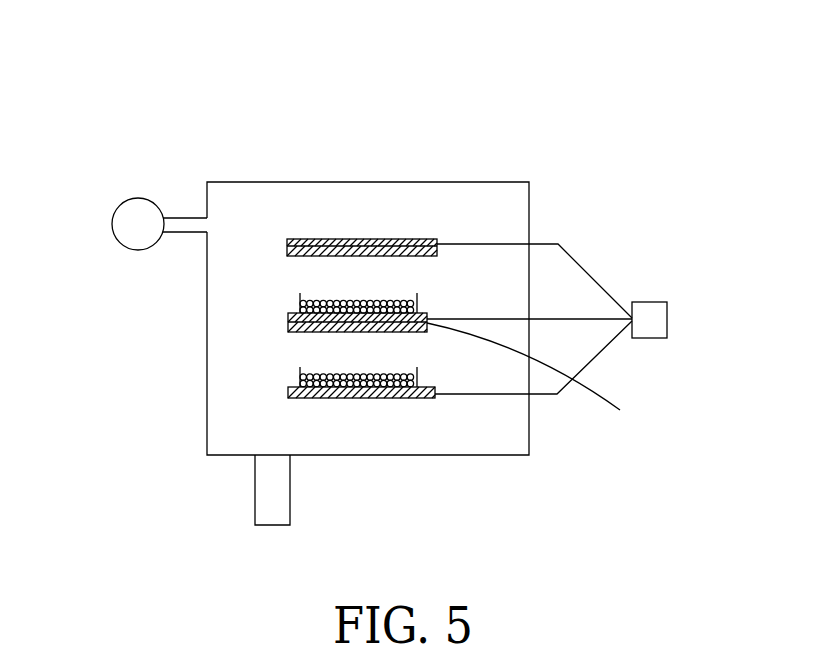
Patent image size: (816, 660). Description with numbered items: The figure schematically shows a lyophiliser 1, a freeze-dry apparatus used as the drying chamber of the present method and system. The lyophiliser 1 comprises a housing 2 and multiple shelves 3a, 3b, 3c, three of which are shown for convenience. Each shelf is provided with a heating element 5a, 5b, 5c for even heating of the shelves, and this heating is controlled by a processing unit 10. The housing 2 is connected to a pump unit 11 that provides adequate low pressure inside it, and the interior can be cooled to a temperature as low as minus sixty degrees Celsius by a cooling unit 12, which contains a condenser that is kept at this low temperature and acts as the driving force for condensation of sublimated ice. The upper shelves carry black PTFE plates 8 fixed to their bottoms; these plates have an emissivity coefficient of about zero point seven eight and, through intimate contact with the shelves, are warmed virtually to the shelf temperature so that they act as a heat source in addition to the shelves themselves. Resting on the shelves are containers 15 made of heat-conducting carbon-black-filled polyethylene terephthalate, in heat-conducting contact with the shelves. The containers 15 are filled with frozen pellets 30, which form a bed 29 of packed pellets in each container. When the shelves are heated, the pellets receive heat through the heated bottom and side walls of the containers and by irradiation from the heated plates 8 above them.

The lyophiliser 1 is at (552, 151).
The housing 2 is at (490, 455).
The shelf 3a is at (300, 239).
The shelf 3b is at (292, 327).
The shelf 3c is at (292, 396).
The heating element 5a is at (425, 241).
The heating element 5b is at (425, 321).
The heating element 5c is at (410, 398).
The black PTFE plate 8 is at (292, 258).
The processing unit 10 is at (668, 320).
The pump unit 11 is at (122, 243).
The cooling unit 12 is at (290, 480).
The container 15 is at (300, 301).
The bed of packed pellets 29 is at (401, 294).
The frozen pellets 30 is at (313, 300).